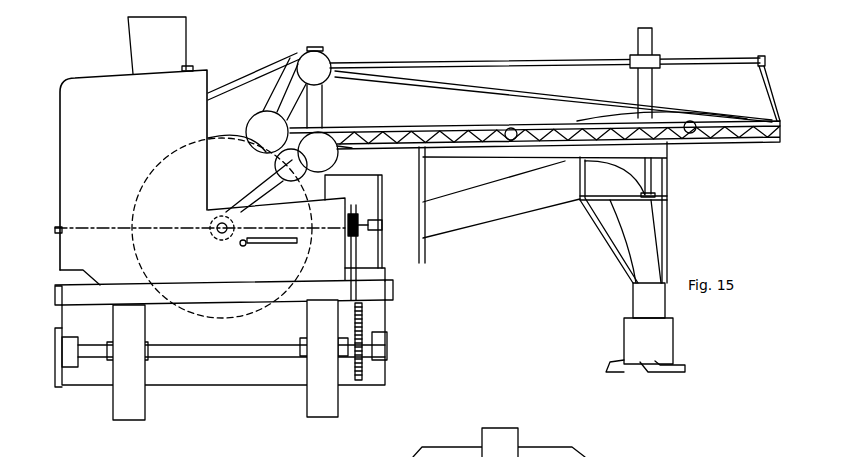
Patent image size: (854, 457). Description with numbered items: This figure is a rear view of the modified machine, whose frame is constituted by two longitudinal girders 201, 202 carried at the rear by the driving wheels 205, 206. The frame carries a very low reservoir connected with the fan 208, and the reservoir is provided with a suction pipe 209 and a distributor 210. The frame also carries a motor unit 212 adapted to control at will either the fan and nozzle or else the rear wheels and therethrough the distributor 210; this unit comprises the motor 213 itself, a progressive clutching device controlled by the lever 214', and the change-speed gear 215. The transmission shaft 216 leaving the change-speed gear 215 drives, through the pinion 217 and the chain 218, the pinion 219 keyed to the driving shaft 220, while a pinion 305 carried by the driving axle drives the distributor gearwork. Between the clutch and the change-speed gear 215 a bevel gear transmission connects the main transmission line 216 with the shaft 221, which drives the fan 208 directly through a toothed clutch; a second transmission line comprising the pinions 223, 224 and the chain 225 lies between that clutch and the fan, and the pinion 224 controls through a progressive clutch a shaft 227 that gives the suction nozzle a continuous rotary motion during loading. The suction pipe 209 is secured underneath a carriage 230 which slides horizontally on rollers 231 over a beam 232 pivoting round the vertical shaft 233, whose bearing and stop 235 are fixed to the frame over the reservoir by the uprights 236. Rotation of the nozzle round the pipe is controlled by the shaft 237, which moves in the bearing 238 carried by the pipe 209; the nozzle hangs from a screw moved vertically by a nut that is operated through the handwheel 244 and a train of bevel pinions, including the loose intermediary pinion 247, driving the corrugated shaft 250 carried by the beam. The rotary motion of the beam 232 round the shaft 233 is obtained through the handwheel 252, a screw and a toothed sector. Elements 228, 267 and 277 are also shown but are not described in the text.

The motor unit 212 is at (114, 87).
The exhaust hood 228 is at (178, 47).
The motor 213 is at (97, 238).
The fan 208 is at (217, 310).
The shaft 221 is at (219, 225).
The pinion 223 is at (216, 237).
The lever 214' is at (268, 255).
The uprights 236 is at (232, 88).
The stop 235 is at (318, 48).
The handwheel 252 is at (256, 123).
The vertical shaft 233 is at (314, 113).
The shaft 227 is at (318, 147).
The pinion 224 is at (328, 162).
The idler pulley 267 is at (282, 174).
The chain 225 is at (250, 200).
The handwheel 244 is at (327, 62).
The corrugated shaft 250 is at (703, 62).
The rollers 231 is at (512, 138).
The beam 232 is at (485, 147).
The carriage 230 is at (662, 150).
The suction pipe 209 is at (500, 207).
The shaft 237 is at (651, 180).
The bearing 238 is at (653, 213).
The pinion 217 is at (354, 220).
The change-speed gear 215 is at (362, 268).
The transmission shaft 216 is at (325, 227).
The longitudinal girder 201 is at (53, 300).
The longitudinal girder 202 is at (390, 290).
The chain 218 is at (390, 280).
The frame bracket 277 is at (58, 332).
The pinion 305 is at (62, 372).
The driving shaft 220 is at (230, 347).
The rear driving wheel 205 is at (137, 408).
The rear driving wheel 206 is at (318, 398).
The pinion 219 is at (362, 320).
The distributor 210 is at (378, 367).
The intermediary pinion 247 is at (578, 450).